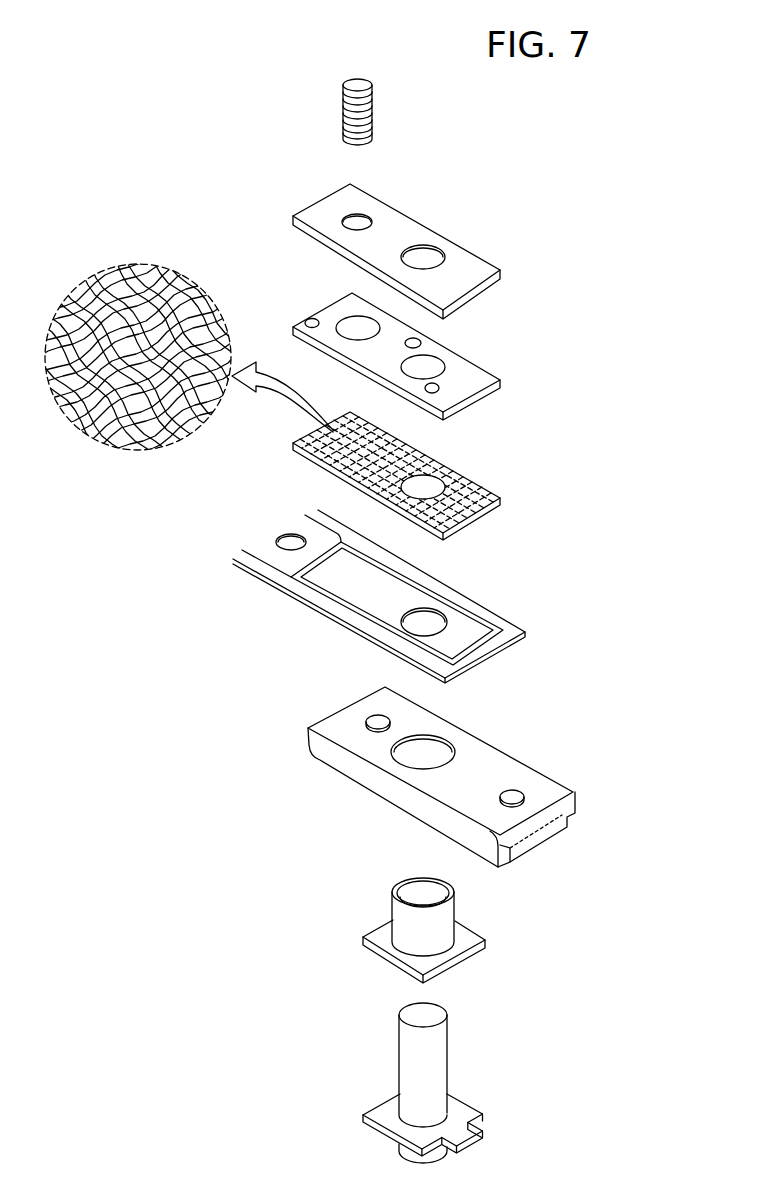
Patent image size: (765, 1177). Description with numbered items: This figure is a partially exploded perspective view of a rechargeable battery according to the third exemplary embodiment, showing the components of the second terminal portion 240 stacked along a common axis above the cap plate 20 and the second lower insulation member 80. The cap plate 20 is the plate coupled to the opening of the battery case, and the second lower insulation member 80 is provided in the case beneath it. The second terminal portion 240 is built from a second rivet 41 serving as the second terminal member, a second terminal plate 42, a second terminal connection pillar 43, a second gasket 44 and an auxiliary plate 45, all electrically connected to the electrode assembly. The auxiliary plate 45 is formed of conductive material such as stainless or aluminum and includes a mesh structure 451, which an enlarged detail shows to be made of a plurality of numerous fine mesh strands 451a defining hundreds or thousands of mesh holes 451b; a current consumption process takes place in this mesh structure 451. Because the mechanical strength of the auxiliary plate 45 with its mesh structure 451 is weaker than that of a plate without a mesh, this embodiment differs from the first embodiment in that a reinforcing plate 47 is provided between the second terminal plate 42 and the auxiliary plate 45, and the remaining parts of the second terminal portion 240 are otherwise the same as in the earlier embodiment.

The cap plate 20 is at (507, 605).
The second lower insulation member 80 is at (560, 781).
The second terminal portion 240 is at (645, 482).
The second rivet 41 is at (447, 1058).
The second terminal plate 42 is at (483, 252).
The second terminal connection pillar 43 is at (372, 110).
The second gasket 44 is at (478, 926).
The auxiliary plate 45 is at (480, 480).
The reinforcing plate 47 is at (480, 368).
The mesh structure 451 is at (179, 306).
The mesh strands 451a is at (130, 275).
The mesh holes 451b is at (185, 340).